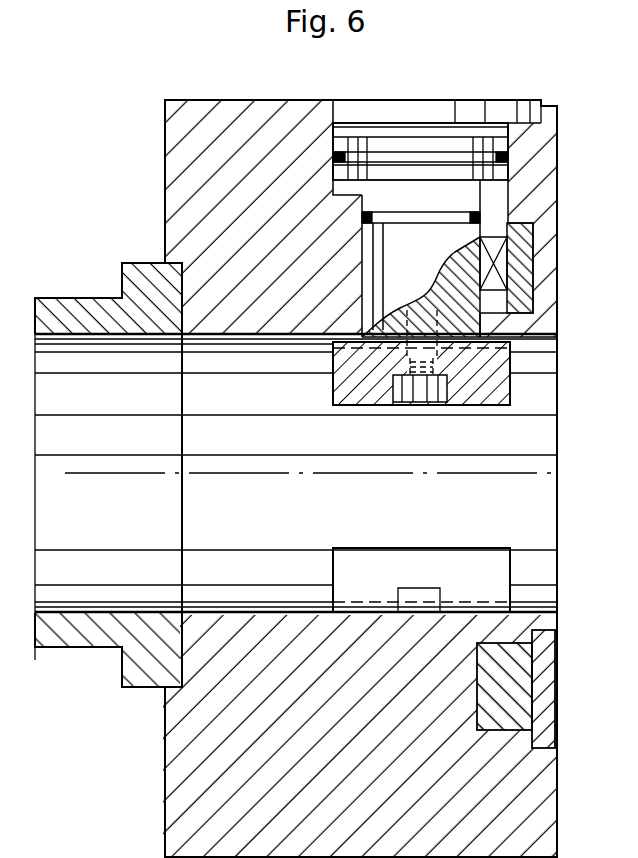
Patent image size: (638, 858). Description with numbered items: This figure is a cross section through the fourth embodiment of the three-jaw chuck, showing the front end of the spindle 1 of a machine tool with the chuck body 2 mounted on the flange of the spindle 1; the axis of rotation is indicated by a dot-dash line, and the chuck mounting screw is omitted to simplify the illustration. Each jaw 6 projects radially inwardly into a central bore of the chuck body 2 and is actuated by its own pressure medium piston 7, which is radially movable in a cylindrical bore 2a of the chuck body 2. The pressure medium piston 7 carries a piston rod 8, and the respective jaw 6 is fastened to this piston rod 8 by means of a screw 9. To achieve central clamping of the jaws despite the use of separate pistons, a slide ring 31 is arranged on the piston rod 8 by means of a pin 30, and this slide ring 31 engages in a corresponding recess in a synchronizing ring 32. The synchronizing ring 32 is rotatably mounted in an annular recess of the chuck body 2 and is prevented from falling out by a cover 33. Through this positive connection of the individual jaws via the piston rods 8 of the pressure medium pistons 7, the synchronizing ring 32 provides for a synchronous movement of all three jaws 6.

The spindle 1 is at (80, 310).
The chuck body 2 is at (178, 132).
The cylindrical bore 2a is at (338, 185).
The jaw 6 is at (503, 392).
The pressure medium piston 7 is at (508, 158).
The piston rod 8 is at (421, 261).
The screw 9 is at (415, 390).
The pin 30 is at (480, 277).
The slide ring 31 is at (495, 252).
The synchronizing ring 32 is at (515, 673).
The cover 33 is at (542, 720).